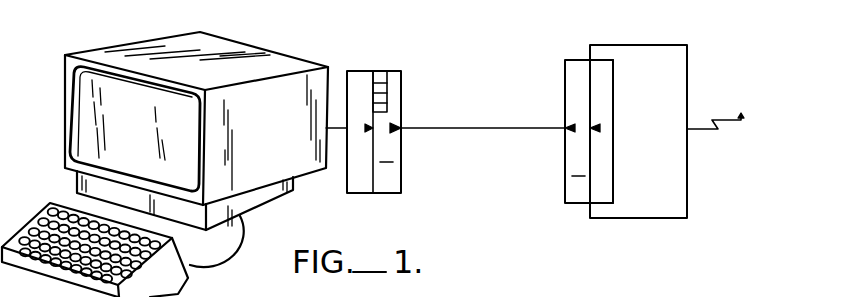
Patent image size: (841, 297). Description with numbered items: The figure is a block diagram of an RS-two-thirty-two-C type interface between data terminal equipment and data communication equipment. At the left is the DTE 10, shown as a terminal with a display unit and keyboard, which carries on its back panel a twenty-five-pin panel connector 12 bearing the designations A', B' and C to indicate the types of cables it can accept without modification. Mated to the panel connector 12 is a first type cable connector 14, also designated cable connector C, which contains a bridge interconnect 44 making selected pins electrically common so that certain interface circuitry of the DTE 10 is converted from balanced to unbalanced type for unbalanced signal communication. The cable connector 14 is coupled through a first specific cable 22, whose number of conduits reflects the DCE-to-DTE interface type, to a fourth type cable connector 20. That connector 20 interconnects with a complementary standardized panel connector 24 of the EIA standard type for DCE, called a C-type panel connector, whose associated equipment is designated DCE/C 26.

The data terminal equipment (DTE) 10 is at (235, 40).
The panel connector 12 is at (355, 70).
The bridge interconnect 44 is at (380, 79).
The first type cable connector 14 is at (404, 113).
The first specific cable 22 is at (447, 128).
The fourth type cable connector 20 is at (565, 82).
The panel connector 24 is at (601, 62).
The DCE/C 26 is at (677, 45).